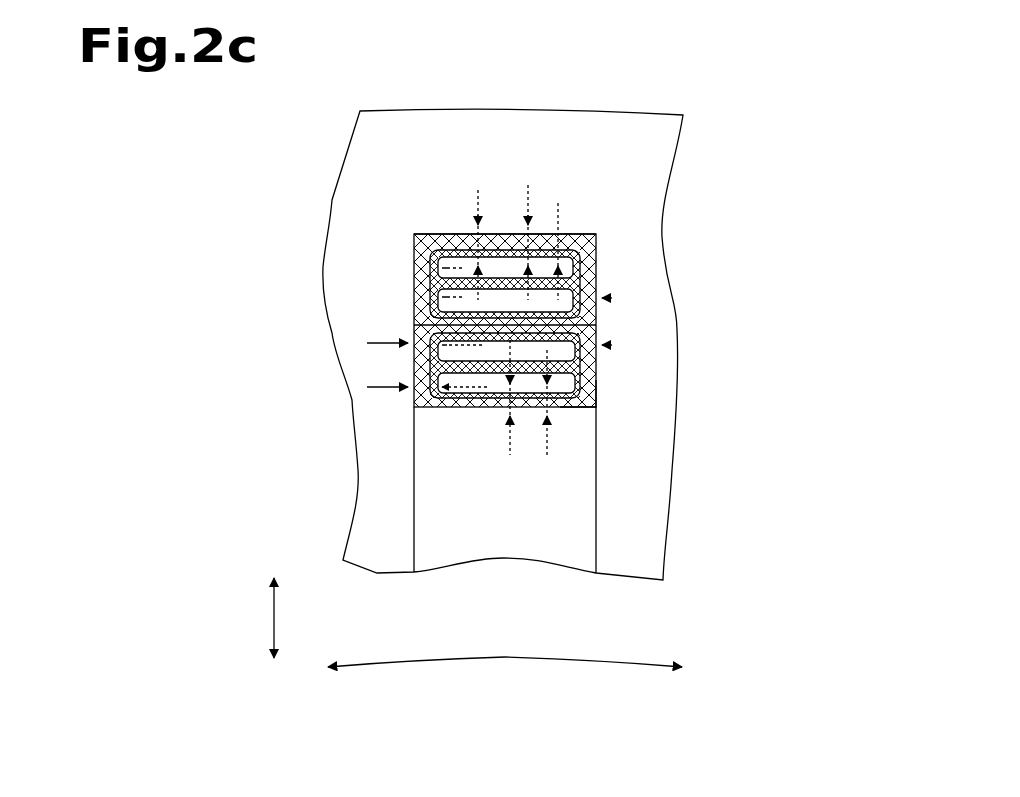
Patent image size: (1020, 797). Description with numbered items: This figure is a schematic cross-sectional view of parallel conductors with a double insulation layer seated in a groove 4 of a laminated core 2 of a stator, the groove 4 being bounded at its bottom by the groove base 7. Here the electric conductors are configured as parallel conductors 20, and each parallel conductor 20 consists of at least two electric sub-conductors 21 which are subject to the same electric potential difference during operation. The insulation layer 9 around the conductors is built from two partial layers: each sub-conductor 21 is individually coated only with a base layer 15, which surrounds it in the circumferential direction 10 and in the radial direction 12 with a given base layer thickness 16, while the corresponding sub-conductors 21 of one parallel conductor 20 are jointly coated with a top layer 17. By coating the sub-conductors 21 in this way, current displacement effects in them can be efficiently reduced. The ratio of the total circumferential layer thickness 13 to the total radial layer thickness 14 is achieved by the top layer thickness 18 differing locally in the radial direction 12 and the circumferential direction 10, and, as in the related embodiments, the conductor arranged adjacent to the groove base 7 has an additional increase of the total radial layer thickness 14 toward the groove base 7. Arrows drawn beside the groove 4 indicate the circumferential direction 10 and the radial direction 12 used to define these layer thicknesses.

The laminated core 2 is at (637, 440).
The groove 4 is at (420, 535).
The groove base 7 is at (408, 228).
The insulation layer 9 is at (592, 424).
The circumferential direction 10 is at (510, 657).
The radial direction 12 is at (271, 619).
The total circumferential layer thickness 13 is at (417, 362).
The total radial layer thickness 14 is at (463, 233).
The base layer 15 is at (596, 238).
The base layer thickness 16 is at (578, 233).
The top layer 17 is at (417, 327).
The top layer thickness 18 is at (520, 233).
The parallel conductor 20 is at (612, 345).
The sub-conductor 21 is at (417, 285).